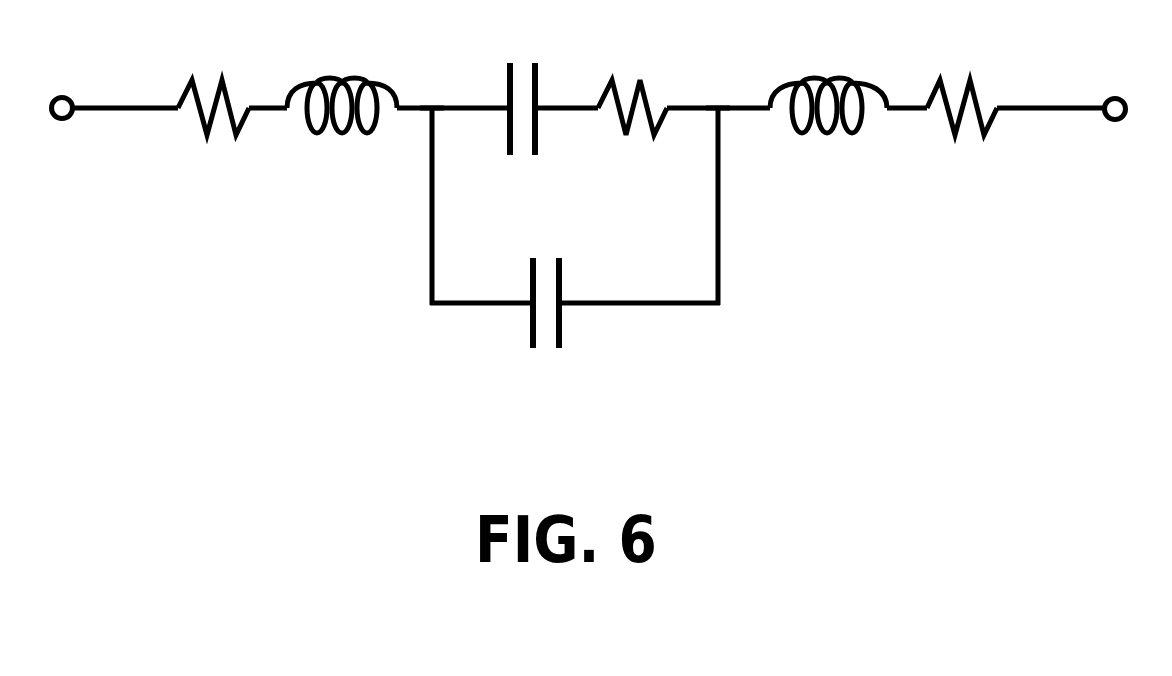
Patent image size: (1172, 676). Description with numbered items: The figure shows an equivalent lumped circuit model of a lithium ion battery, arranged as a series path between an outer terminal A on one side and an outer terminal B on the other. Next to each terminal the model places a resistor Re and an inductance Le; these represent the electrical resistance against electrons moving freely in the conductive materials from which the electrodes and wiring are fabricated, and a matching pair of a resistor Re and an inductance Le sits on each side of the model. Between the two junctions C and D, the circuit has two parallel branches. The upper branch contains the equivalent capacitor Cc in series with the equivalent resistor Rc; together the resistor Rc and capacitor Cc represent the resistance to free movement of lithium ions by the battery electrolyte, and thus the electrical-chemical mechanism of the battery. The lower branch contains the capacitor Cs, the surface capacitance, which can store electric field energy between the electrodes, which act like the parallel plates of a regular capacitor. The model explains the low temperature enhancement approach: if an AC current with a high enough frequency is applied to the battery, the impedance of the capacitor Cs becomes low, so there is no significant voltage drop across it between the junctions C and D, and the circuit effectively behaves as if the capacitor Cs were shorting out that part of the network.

The terminal A is at (60, 74).
The terminal B is at (1112, 73).
The junction C is at (430, 68).
The junction D is at (719, 68).
The resistor Re is at (587, 67).
The inductance Le is at (587, 66).
The capacitor Cc is at (521, 77).
The resistor Rc is at (632, 67).
The surface capacitance Cs is at (542, 342).